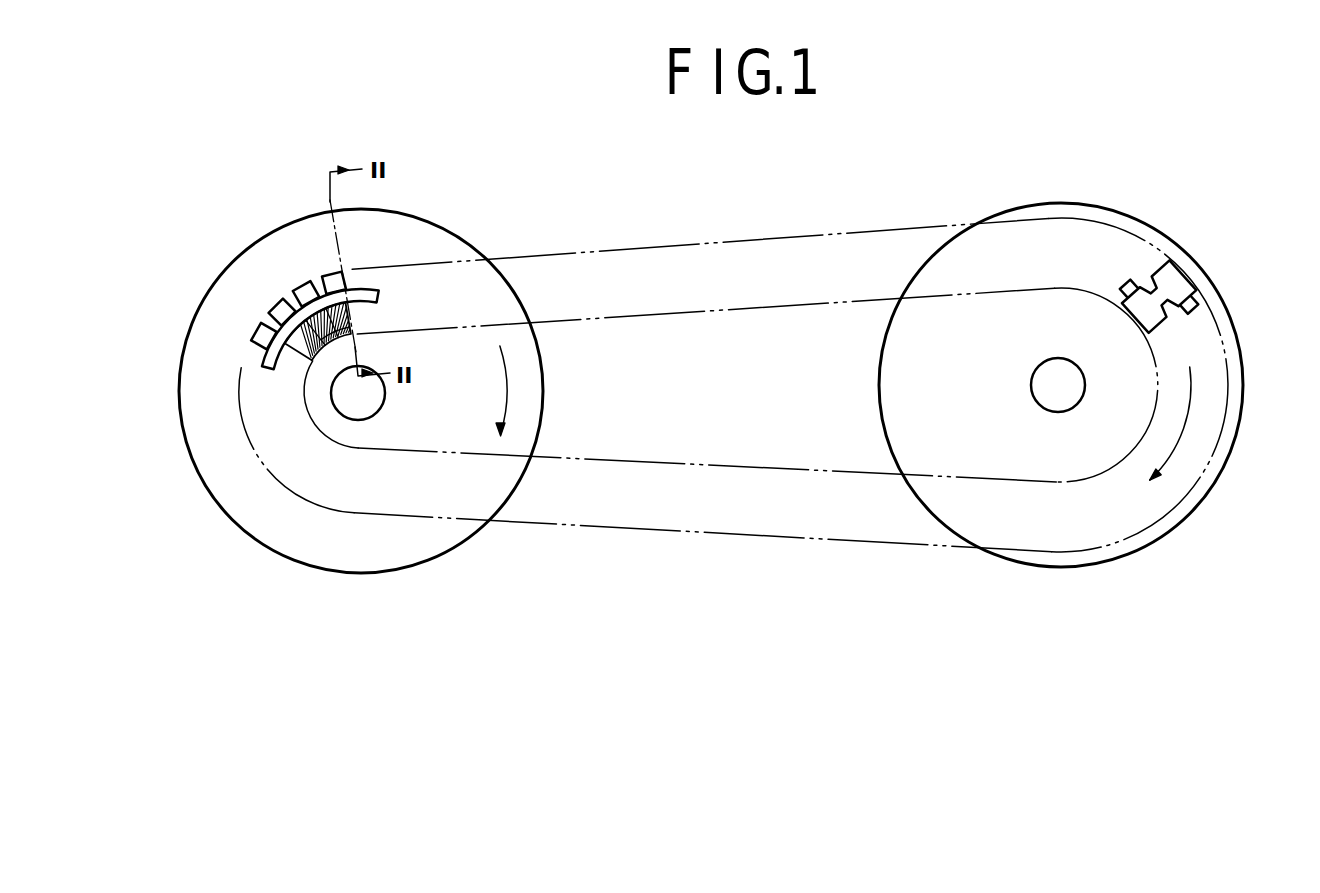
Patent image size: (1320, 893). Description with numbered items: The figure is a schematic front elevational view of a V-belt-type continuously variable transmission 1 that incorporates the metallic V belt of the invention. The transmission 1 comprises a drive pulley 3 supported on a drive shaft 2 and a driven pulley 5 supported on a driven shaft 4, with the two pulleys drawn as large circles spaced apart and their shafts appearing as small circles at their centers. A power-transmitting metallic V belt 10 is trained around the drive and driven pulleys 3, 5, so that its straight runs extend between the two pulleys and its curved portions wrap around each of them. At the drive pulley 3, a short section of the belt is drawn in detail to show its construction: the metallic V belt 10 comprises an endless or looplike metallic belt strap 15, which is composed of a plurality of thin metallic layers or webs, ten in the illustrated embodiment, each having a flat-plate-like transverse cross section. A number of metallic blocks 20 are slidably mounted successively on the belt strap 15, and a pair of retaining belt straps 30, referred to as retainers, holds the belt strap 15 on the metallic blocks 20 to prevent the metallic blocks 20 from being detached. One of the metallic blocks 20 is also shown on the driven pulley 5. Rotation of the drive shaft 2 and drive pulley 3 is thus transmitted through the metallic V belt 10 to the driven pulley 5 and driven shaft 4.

The V-belt-type continuously variable transmission 1 is at (774, 223).
The drive shaft 2 is at (375, 408).
The drive pulley 3 is at (285, 225).
The driven shaft 4 is at (1074, 406).
The driven pulley 5 is at (1152, 227).
The metallic V belt 10 is at (642, 247).
The belt strap 15 is at (283, 372).
The metallic blocks 20 is at (313, 291).
The retaining belt straps 30 is at (262, 366).